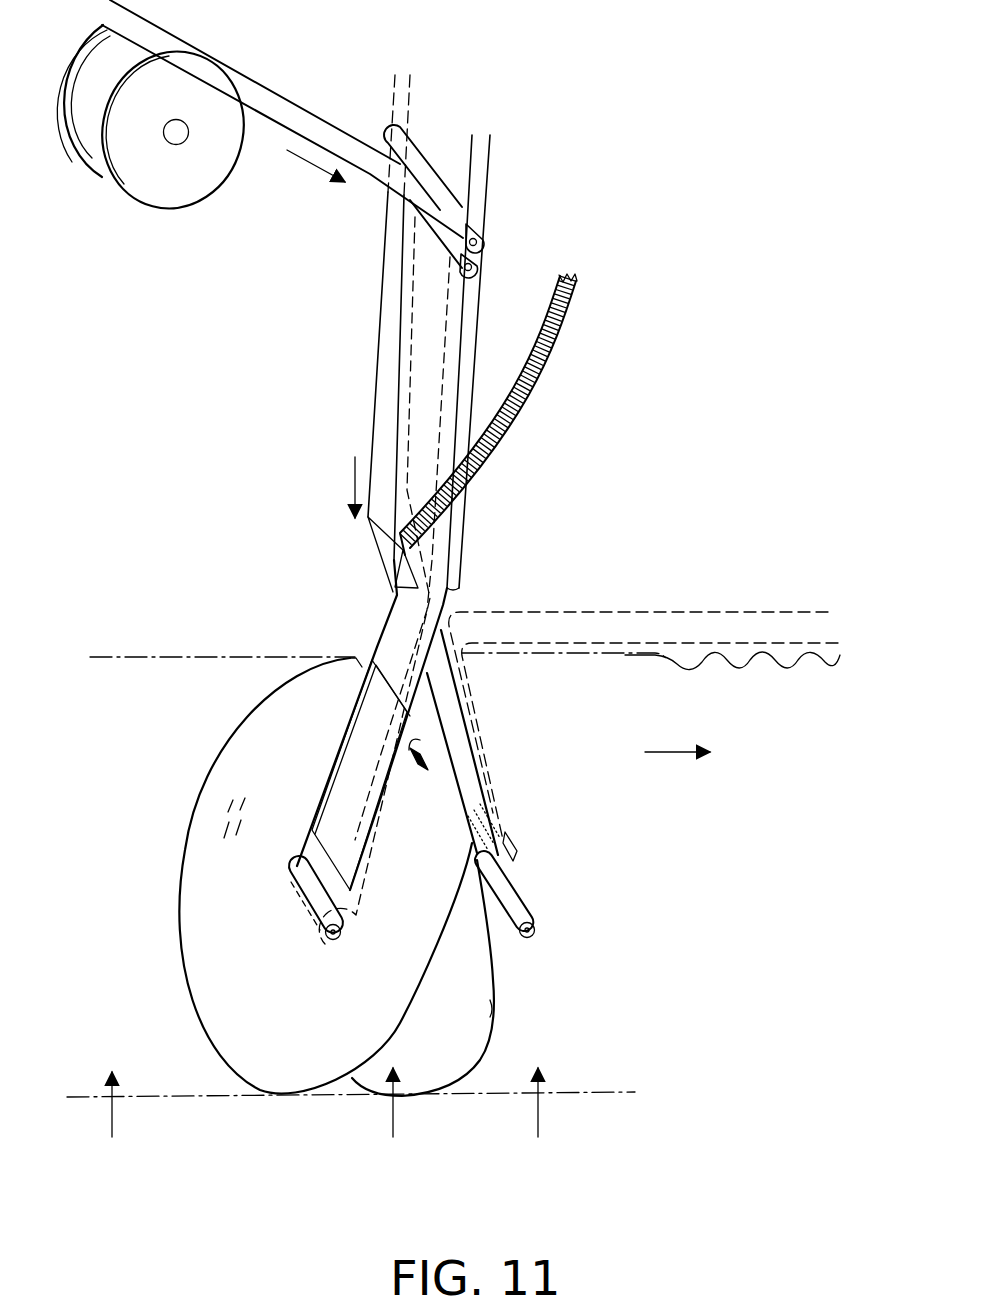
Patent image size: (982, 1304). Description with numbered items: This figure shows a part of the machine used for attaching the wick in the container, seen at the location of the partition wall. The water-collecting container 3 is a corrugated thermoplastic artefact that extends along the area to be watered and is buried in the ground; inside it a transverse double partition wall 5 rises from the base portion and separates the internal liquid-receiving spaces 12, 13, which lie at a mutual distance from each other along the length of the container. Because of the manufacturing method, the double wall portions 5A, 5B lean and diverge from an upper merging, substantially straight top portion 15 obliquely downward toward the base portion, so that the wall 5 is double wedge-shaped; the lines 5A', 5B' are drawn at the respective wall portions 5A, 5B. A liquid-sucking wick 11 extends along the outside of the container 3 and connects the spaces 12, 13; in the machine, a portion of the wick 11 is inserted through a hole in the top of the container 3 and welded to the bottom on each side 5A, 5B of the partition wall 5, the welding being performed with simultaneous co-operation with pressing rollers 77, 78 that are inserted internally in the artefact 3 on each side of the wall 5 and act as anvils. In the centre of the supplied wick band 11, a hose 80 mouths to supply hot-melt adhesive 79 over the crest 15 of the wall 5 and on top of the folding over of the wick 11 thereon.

The liquid-sucking wick 11 is at (280, 103).
The hose 80 is at (573, 322).
The water-collecting container 3 is at (760, 634).
The hot-melt adhesive 79 is at (420, 753).
The top portion 15 is at (440, 770).
The pressing roller 77 is at (323, 928).
The pressing roller 78 is at (537, 930).
The transverse double partition wall 5 is at (393, 1124).
The double wall portion 5A is at (271, 876).
The first disc wheel edge 5A' is at (169, 794).
The double wall portion 5B is at (493, 978).
The second disc wheel edge 5B' is at (565, 1003).
The internal liquid-receiving space 12 is at (115, 1126).
The internal liquid-receiving space 13 is at (541, 1124).